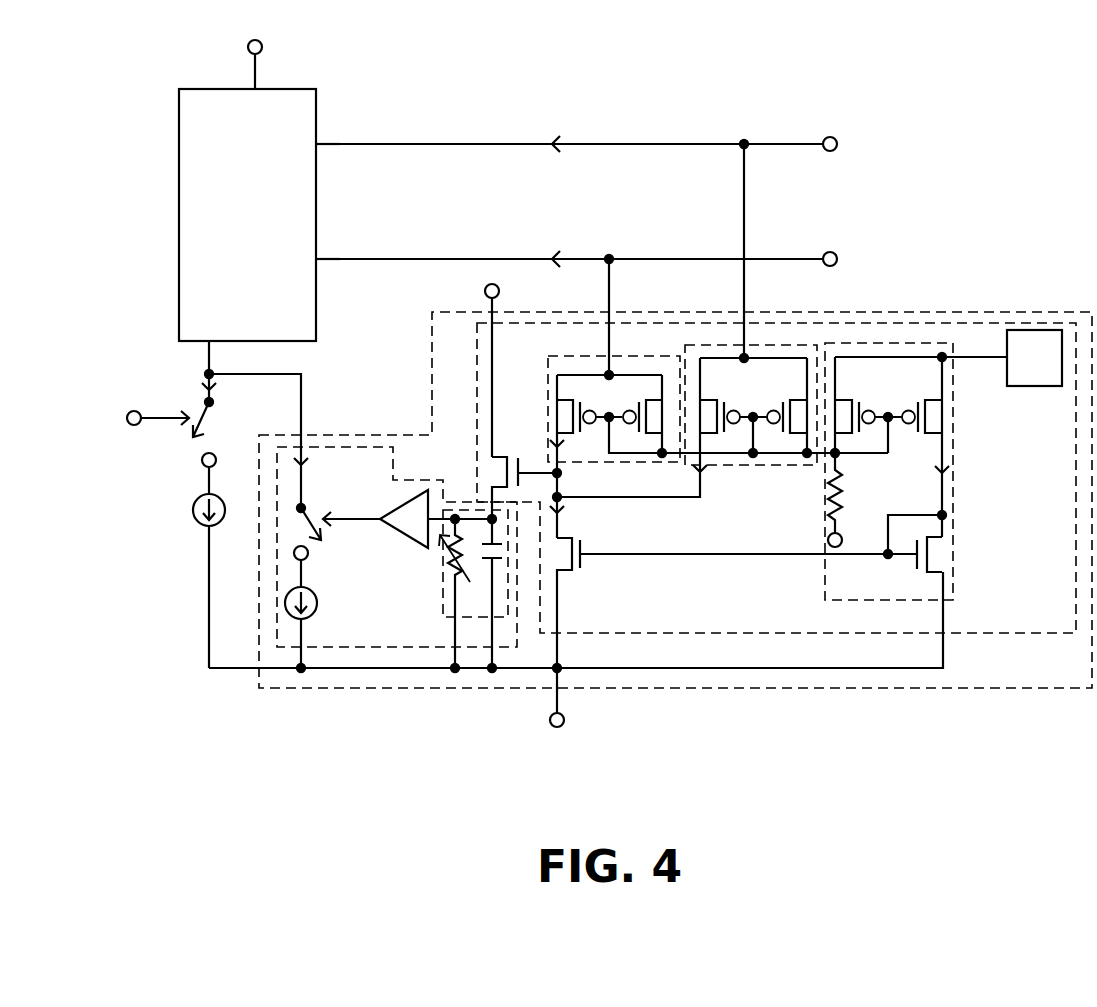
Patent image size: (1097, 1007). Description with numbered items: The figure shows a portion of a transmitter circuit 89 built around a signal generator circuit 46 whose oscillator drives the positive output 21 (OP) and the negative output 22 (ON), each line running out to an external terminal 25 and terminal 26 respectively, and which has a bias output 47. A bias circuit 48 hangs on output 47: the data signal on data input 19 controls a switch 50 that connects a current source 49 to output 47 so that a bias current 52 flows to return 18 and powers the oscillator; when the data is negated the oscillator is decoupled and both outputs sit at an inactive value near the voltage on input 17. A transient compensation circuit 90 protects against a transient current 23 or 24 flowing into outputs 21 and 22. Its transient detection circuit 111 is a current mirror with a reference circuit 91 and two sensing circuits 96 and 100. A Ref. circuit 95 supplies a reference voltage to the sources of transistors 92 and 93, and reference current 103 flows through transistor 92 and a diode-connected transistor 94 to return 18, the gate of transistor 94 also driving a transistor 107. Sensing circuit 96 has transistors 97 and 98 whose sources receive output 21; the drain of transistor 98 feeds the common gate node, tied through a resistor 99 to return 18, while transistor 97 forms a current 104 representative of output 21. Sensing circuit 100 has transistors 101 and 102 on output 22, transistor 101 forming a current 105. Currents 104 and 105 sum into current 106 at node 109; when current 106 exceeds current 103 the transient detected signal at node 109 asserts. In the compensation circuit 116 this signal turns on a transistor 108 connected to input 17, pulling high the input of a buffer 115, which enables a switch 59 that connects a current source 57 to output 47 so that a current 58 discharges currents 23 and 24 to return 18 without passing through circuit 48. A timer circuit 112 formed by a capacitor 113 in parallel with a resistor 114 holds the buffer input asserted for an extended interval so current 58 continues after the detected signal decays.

The input 17 is at (262, 44).
The return 18 is at (551, 726).
The data input 19 is at (143, 418).
The positive output 21 is at (320, 142).
The negative output 22 is at (320, 257).
The transient current 23 is at (548, 140).
The transient current 24 is at (548, 255).
The operation signal terminal 25 is at (838, 143).
The enable signal terminal 26 is at (838, 257).
The signal generator circuit 46 is at (318, 192).
The bias output 47 is at (212, 352).
The bias circuit 48 is at (168, 468).
The current source 49 is at (196, 522).
The switch 50 is at (203, 428).
The bias current 52 is at (216, 386).
The current source 57 is at (318, 598).
The current 58 is at (310, 462).
The switch 59 is at (314, 505).
The transmitter circuit 89 is at (745, 763).
The transient compensation circuit 90 is at (350, 433).
The reference circuit 91 is at (825, 586).
The transistor 92 is at (922, 400).
The transistor 93 is at (858, 400).
The transistor 94 is at (950, 553).
The reference circuit 95 is at (1030, 387).
The sensing circuit 96 is at (731, 467).
The transistor 97 is at (728, 400).
The transistor 98 is at (786, 400).
The resistor 99 is at (827, 493).
The sensing circuit 100 is at (548, 366).
The transistor 101 is at (580, 389).
The transistor 102 is at (645, 446).
The reference current 103 is at (935, 470).
The current 104 is at (698, 480).
The current 105 is at (550, 445).
The current 106 is at (565, 512).
The transistor 107 is at (576, 573).
The transistor 108 is at (500, 470).
The node 109 is at (562, 474).
The transient detection circuit 111 is at (680, 633).
The timer circuit 112 is at (443, 606).
The capacitor 113 is at (480, 558).
The resistor 114 is at (445, 576).
The buffer 115 is at (398, 526).
The compensation circuit 116 is at (342, 648).